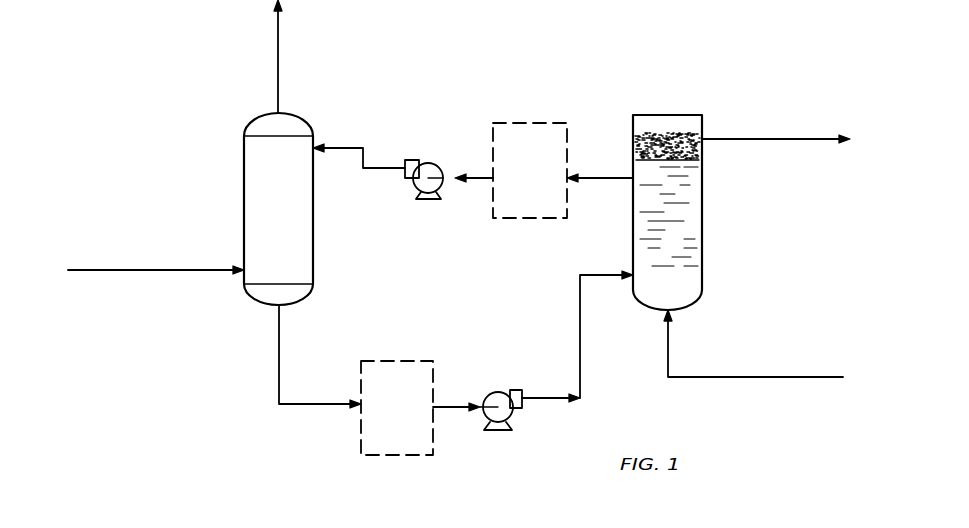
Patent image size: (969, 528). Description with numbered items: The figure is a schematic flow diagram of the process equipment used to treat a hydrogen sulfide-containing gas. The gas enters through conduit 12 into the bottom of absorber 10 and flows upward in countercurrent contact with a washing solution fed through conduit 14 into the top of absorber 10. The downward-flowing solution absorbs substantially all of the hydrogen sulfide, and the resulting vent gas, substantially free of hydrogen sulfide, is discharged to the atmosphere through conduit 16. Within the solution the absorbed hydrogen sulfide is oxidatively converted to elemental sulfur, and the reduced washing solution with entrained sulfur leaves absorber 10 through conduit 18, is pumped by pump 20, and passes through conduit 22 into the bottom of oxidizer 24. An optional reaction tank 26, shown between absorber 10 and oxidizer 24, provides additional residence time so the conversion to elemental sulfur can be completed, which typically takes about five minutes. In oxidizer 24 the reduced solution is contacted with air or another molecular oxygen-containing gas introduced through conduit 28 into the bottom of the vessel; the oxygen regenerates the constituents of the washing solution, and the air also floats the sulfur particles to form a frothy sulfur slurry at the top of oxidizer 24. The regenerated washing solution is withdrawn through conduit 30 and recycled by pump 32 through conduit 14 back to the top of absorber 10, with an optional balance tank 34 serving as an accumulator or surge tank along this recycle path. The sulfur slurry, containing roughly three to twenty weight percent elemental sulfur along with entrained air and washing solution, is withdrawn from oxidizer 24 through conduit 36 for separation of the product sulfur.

The absorber 10 is at (250, 217).
The conduit 12 is at (146, 273).
The conduit 14 is at (350, 158).
The conduit 16 is at (279, 76).
The conduit 18 is at (279, 358).
The pump 20 is at (500, 431).
The conduit 22 is at (580, 330).
The oxidizer 24 is at (695, 272).
The reaction tank 26 is at (405, 361).
The conduit 28 is at (750, 377).
The conduit 30 is at (598, 178).
The pump 32 is at (432, 165).
The balance tank 34 is at (530, 123).
The conduit 36 is at (783, 143).